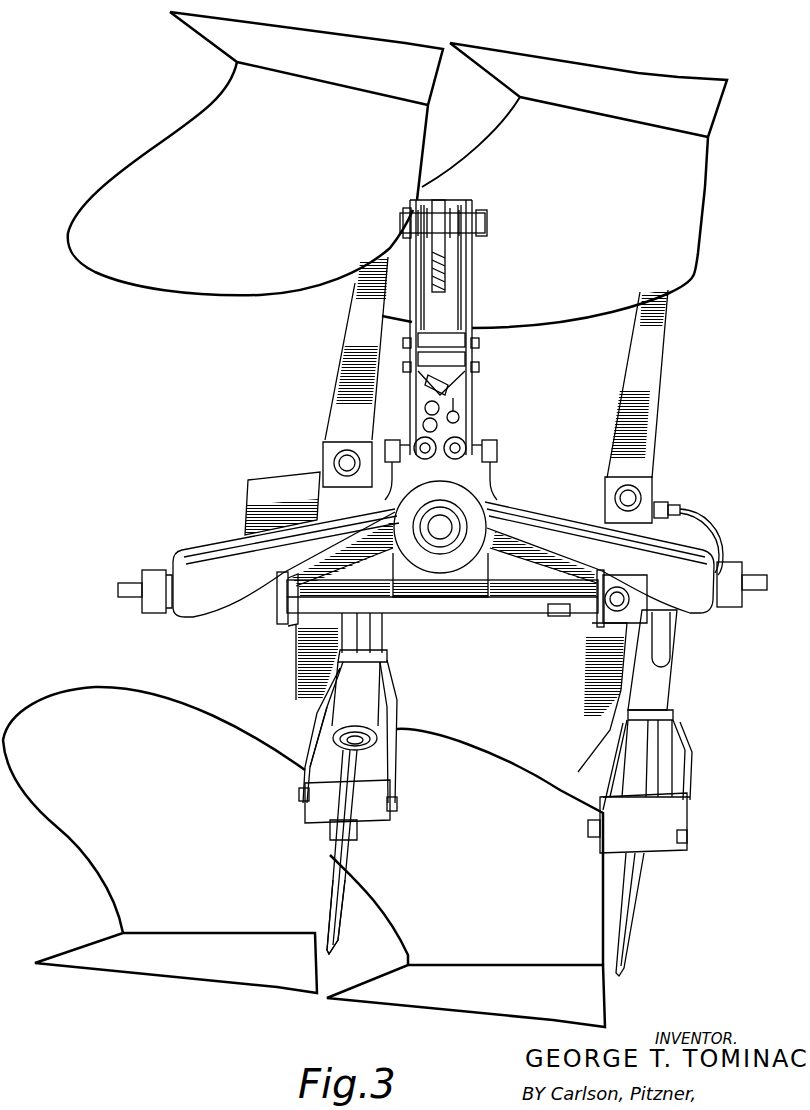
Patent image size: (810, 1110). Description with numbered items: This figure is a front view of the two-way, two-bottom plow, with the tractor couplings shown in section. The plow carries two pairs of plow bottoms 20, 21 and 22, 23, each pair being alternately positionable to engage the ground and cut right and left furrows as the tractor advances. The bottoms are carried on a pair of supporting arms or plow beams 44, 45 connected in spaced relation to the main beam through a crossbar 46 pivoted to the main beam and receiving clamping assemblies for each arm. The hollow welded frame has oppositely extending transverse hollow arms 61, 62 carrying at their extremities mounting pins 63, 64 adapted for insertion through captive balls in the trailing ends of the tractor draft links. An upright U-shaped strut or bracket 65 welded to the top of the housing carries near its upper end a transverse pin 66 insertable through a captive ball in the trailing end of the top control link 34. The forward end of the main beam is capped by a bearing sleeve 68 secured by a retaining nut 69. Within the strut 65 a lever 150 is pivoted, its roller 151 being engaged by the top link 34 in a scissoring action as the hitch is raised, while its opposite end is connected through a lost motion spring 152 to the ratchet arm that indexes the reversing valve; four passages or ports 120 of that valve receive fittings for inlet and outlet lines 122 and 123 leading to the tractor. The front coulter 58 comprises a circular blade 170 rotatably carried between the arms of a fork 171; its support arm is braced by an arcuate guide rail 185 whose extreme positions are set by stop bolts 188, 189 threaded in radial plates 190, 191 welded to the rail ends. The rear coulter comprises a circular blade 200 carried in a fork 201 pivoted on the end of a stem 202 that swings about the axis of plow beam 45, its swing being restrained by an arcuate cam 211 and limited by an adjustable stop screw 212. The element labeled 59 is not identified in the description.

The plow bottom 20 is at (467, 997).
The plow bottom 21 is at (185, 960).
The plow bottom 22 is at (582, 303).
The plow bottom 23 is at (207, 272).
The top control link 34 is at (445, 272).
The plow beam 44 is at (350, 375).
The plow beam 45 is at (658, 396).
The crossbar 46 is at (284, 495).
The front coulter 58 is at (404, 704).
The shank clamp 59 is at (692, 747).
The transverse hollow arm 61 is at (216, 560).
The transverse hollow arm 62 is at (580, 530).
The mounting pin 63 is at (128, 585).
The mounting pin 64 is at (762, 590).
The upright U-shaped strut 65 is at (468, 302).
The transverse pin 66 is at (487, 222).
The bearing sleeve 68 is at (456, 590).
The retaining nut 69 is at (484, 503).
The passage 120 is at (383, 428).
The inlet line 122 is at (398, 437).
The outlet line 123 is at (470, 458).
The lever 150 is at (450, 396).
The roller 151 is at (437, 345).
The lost motion spring 152 is at (462, 418).
The circular blade 170 is at (340, 895).
The fork 171 is at (325, 718).
The arcuate guide rail 185 is at (518, 605).
The stop bolt 188 is at (306, 630).
The stop bolt 189 is at (552, 636).
The radial plate 190 is at (280, 628).
The radial plate 191 is at (558, 630).
The circular blade 200 is at (633, 926).
The fork 201 is at (688, 792).
The stem 202 is at (672, 690).
The arcuate cam 211 is at (725, 540).
The adjustable stop screw 212 is at (676, 512).